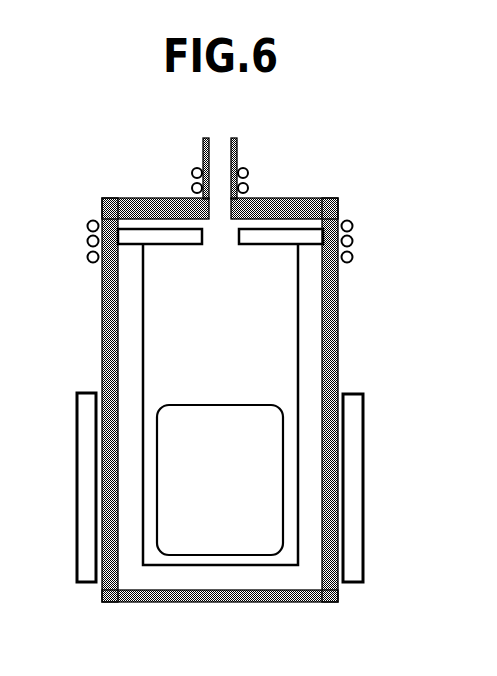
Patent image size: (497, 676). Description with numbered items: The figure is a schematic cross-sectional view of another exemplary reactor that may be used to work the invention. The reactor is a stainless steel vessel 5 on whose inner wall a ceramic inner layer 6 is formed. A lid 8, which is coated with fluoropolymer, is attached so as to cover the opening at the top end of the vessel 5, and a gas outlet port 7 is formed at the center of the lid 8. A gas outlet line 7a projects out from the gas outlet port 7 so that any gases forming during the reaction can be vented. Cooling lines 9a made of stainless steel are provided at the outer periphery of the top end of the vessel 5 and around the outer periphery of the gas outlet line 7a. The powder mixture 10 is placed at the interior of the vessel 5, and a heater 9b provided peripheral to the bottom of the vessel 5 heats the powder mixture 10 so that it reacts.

The vessel 5 is at (256, 403).
The ceramic inner layer 6 is at (222, 580).
The gas outlet port 7 is at (212, 208).
The gas outlet line 7a is at (236, 153).
The lid 8 is at (291, 217).
The cooling lines 9a is at (350, 240).
The heater 9b is at (353, 455).
The powder mixture 10 is at (177, 433).